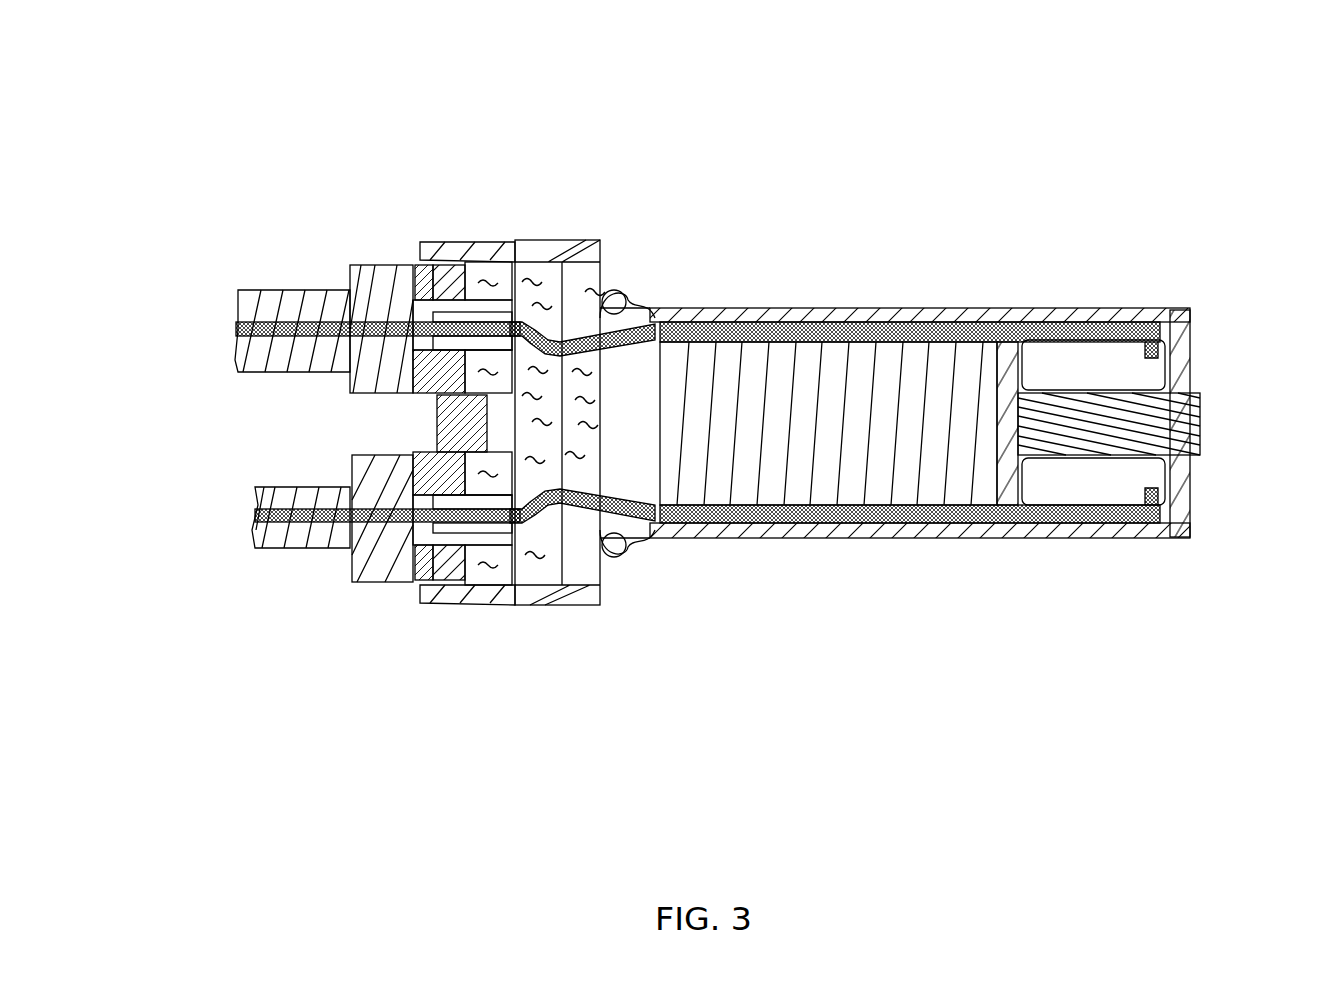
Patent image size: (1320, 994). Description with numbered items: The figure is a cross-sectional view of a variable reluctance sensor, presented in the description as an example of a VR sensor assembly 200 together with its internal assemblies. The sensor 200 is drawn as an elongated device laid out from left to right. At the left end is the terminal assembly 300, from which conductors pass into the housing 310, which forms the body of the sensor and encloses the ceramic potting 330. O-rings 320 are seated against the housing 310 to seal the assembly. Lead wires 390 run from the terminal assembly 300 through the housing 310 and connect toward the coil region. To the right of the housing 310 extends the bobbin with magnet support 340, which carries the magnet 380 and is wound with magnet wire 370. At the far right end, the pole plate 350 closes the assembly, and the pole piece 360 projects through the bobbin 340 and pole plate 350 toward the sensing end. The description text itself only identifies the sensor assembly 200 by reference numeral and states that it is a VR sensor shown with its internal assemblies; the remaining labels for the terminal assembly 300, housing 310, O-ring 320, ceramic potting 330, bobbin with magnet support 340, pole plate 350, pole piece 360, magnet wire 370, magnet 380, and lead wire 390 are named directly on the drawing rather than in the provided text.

The VR sensor assembly 200 is at (661, 154).
The terminal assembly 300 is at (378, 282).
The housing 310 is at (552, 238).
The O-ring 320 is at (620, 284).
The ceramic potting 330 is at (608, 408).
The bobbin with magnet support 340 is at (874, 340).
The pole plate 350 is at (1190, 312).
The pole piece 360 is at (1165, 437).
The magnet wire 370 is at (1117, 478).
The magnet 380 is at (884, 455).
The lead wire 390 is at (547, 510).